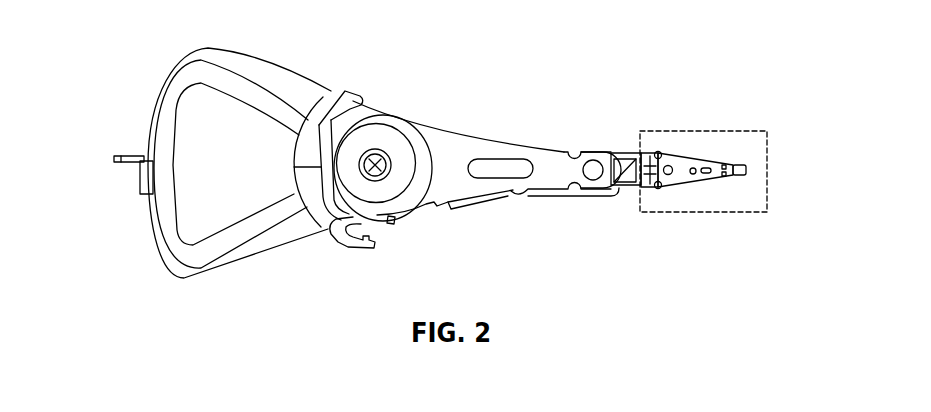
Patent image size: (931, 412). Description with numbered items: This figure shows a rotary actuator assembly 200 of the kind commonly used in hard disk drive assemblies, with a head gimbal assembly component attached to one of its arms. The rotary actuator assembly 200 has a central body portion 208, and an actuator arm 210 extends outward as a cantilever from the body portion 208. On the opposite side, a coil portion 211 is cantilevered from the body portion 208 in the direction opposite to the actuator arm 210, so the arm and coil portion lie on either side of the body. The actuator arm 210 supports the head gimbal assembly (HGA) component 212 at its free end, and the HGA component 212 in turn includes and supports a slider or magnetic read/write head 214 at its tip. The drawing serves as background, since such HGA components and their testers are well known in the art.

The rotary actuator assembly 200 is at (541, 38).
The body portion 208 is at (381, 109).
The actuator arm 210 is at (452, 142).
The coil portion 211 is at (170, 239).
The head gimbal assembly (HGA) component 212 is at (730, 119).
The slider or magnetic read/write head 214 is at (740, 166).